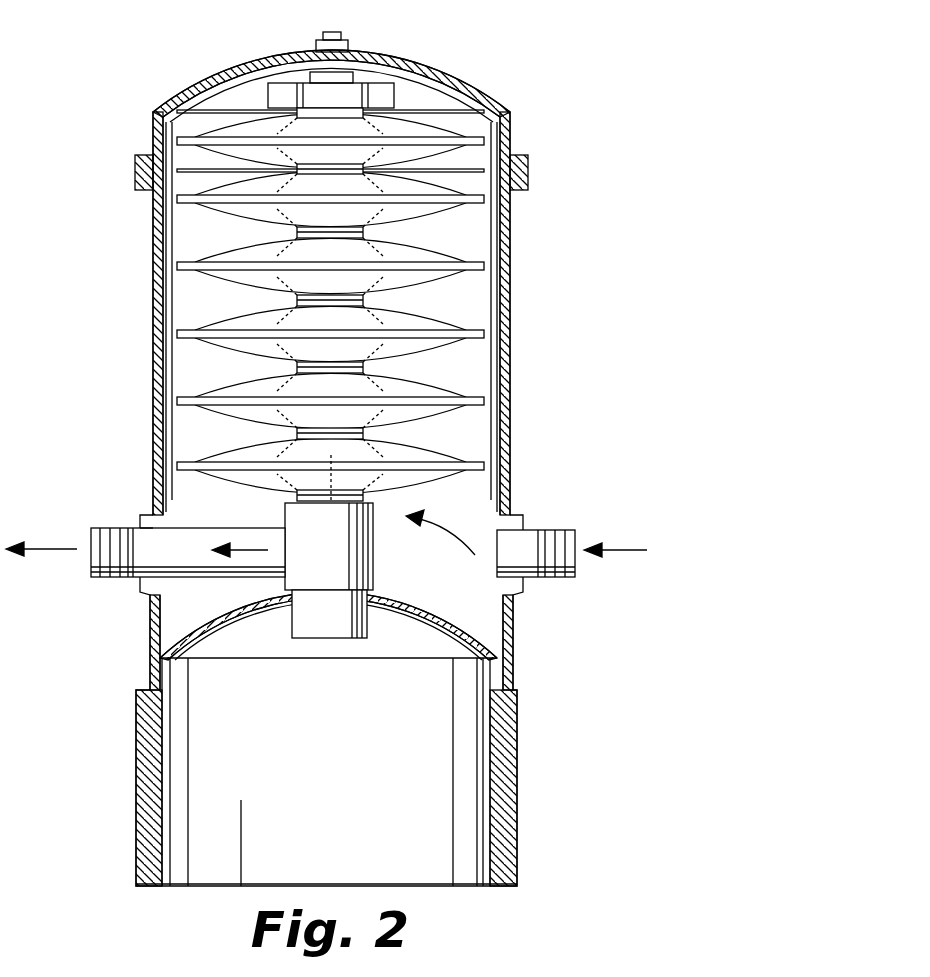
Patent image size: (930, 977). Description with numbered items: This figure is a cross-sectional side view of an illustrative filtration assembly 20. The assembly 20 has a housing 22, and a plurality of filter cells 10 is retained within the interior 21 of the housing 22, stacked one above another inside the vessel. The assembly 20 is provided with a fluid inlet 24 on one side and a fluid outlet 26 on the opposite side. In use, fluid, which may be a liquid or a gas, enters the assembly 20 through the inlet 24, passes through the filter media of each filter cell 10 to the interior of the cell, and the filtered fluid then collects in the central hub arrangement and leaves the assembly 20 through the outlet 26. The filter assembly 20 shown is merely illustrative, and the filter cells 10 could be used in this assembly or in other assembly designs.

The filtration assembly 20 is at (326, 444).
The housing 22 is at (155, 253).
The interior 21 is at (158, 315).
The filter cell 10 is at (452, 321).
The fluid outlet 26 is at (108, 525).
The fluid inlet 24 is at (557, 528).